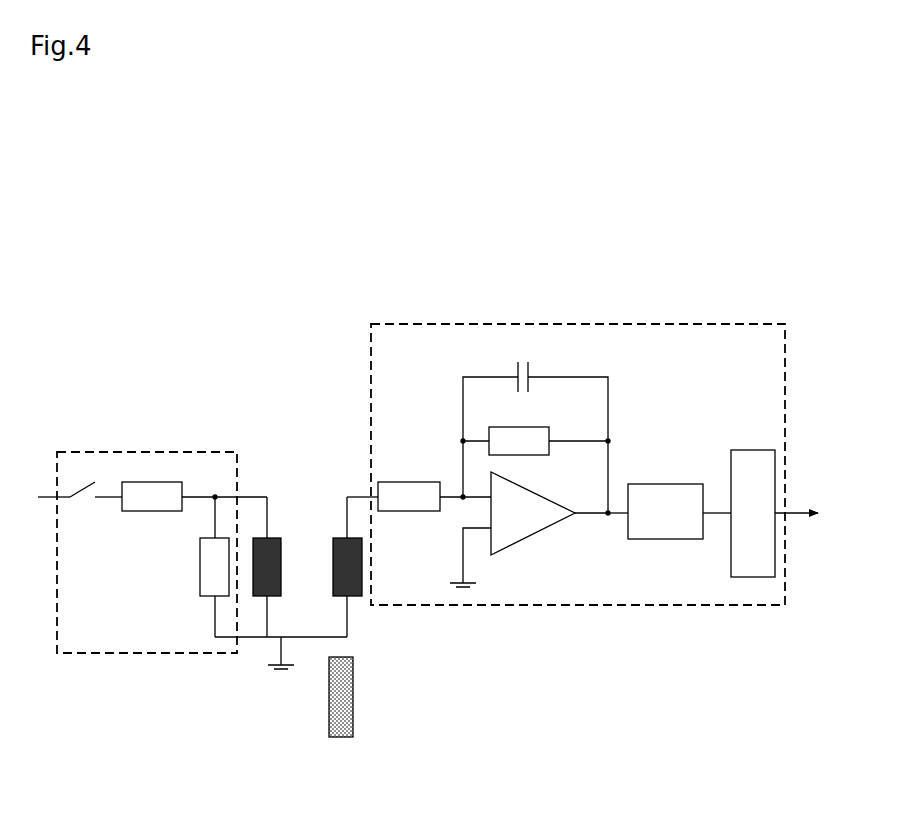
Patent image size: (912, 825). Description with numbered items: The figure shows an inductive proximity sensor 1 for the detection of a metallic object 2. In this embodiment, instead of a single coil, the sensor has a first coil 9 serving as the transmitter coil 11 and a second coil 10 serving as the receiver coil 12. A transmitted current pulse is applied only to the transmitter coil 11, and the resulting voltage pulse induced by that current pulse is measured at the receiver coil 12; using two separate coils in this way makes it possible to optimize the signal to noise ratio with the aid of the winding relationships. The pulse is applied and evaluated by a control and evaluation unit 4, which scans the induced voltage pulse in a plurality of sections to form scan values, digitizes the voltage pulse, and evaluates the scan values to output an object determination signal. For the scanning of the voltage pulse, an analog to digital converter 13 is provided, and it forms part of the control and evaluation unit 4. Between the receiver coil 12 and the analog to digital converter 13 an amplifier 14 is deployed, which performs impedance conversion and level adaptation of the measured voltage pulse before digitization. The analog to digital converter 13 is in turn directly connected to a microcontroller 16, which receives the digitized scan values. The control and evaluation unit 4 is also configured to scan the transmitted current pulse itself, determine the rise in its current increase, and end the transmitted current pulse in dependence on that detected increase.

The inductive proximity sensor 1 is at (291, 231).
The object 2 is at (329, 705).
The control and evaluation unit 4 is at (213, 450).
The first coil 9 is at (276, 534).
The second coil 10 is at (355, 597).
The transmitter coil 11 is at (286, 531).
The receiver coil 12 is at (367, 587).
The analog to digital converter 13 is at (688, 494).
The amplifier 14 is at (540, 562).
The microcontroller 16 is at (755, 460).